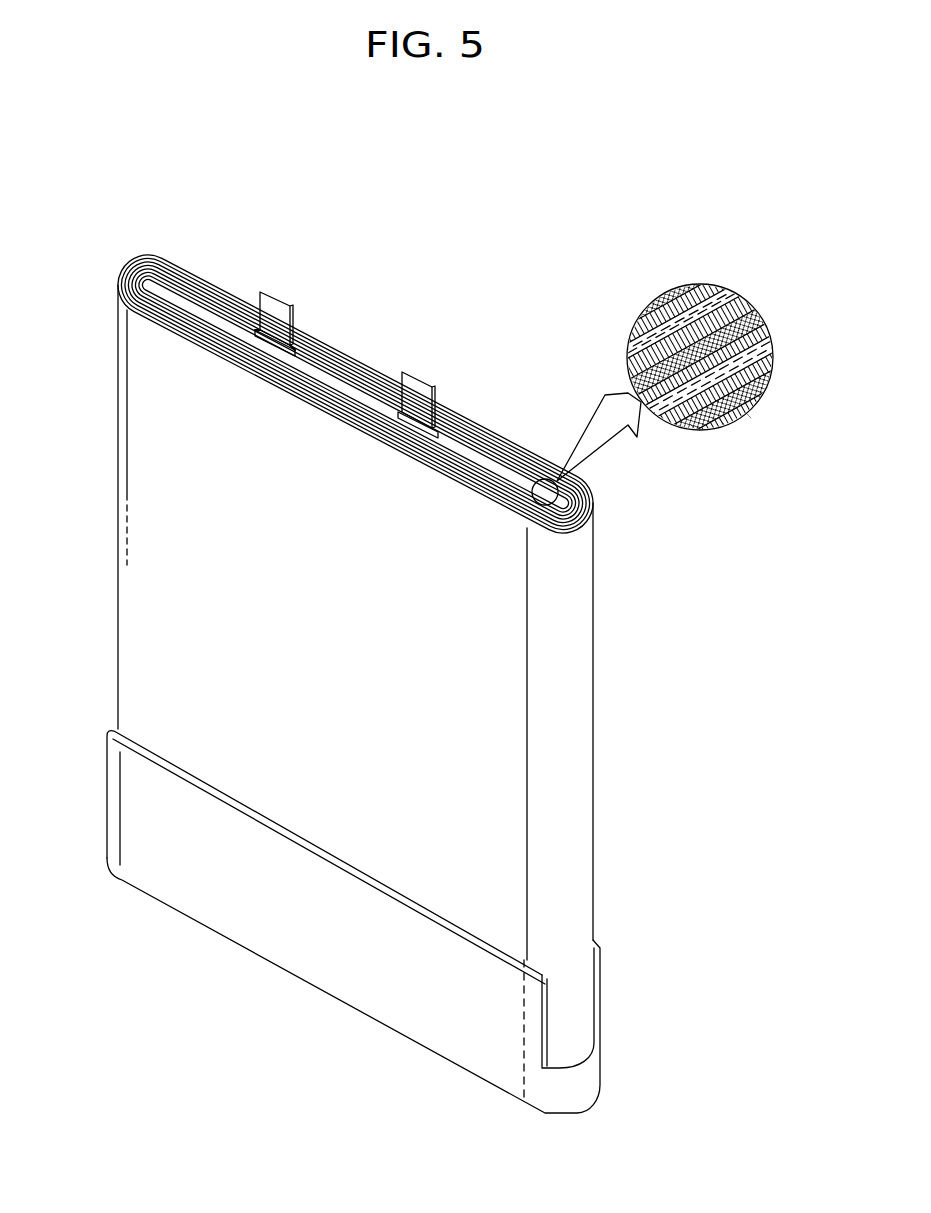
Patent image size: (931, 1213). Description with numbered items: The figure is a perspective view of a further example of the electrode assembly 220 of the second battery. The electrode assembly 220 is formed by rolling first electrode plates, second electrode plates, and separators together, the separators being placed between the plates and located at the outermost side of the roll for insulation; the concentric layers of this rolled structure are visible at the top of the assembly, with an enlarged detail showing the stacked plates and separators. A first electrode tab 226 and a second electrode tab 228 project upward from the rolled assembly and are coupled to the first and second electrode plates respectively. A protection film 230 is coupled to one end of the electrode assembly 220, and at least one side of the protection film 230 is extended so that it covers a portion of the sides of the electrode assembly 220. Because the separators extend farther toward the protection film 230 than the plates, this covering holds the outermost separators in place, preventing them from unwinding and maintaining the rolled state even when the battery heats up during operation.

The electrode assembly 220 is at (515, 300).
The first electrode tab 226 is at (420, 393).
The second electrode tab 228 is at (277, 312).
The protection film 230 is at (320, 970).